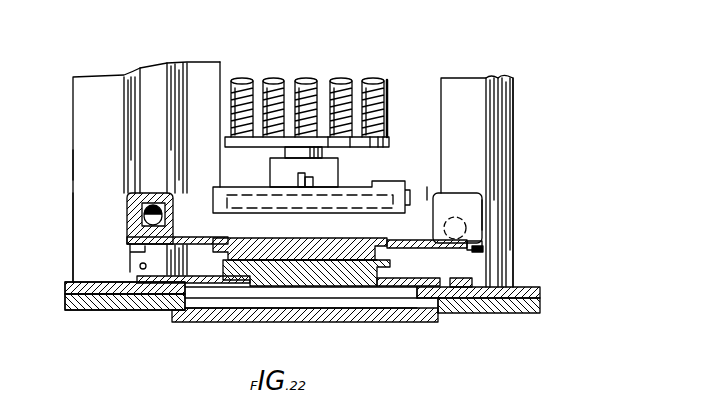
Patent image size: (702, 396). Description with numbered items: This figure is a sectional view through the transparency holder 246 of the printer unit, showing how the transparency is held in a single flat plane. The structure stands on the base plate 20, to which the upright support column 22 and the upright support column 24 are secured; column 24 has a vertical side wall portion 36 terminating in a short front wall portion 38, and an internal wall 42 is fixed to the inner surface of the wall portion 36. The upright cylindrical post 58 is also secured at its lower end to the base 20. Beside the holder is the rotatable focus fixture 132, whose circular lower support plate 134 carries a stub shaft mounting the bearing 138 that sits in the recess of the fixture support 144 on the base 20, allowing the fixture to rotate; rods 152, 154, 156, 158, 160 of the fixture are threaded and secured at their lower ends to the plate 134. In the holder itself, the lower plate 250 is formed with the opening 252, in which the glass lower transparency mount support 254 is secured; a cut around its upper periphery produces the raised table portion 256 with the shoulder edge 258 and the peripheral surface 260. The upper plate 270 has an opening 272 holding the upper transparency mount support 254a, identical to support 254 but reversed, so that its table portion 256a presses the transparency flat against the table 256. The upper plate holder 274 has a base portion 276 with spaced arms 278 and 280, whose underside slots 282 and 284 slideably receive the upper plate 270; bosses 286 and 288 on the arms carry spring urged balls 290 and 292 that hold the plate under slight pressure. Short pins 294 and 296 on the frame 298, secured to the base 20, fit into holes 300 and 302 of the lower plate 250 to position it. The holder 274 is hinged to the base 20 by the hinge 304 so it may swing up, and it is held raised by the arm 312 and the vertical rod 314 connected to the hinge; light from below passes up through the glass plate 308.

The base plate 20 is at (540, 309).
The upright support column 22 is at (469, 77).
The upright support column 24 is at (72, 163).
The vertical side wall portion 36 is at (73, 133).
The short front wall portion 38 is at (88, 193).
The internal wall 42 is at (194, 77).
The upright cylindrical post 58 is at (505, 148).
The rotatable focus fixture 132 is at (388, 88).
The circular lower support plate 134 is at (389, 144).
The bearing 138 is at (320, 152).
The fixture support 144 is at (340, 168).
The fixture rod 152 is at (376, 80).
The fixture rod 154 is at (340, 80).
The fixture rod 156 is at (310, 80).
The fixture rod 158 is at (272, 80).
The fixture rod 160 is at (245, 80).
The transparency holder 246 is at (201, 222).
The lower plate 250 is at (406, 278).
The opening 252 is at (385, 288).
The lower transparency mount support 254 is at (330, 291).
The upper transparency mount support 254a is at (329, 241).
The raised table portion 256 is at (273, 287).
The table portion 256a is at (297, 262).
The shoulder edge 258 is at (223, 283).
The peripheral surface 260 is at (145, 270).
The upper plate 270 is at (427, 211).
The opening 272 is at (386, 242).
The upper plate holder 274 is at (437, 196).
The base portion 276 is at (191, 212).
The arm 278 is at (483, 240).
The arm 280 is at (133, 240).
The slot 282 is at (484, 249).
The slot 284 is at (134, 252).
The boss 286 is at (480, 198).
The boss 288 is at (140, 193).
The spring urged ball 290 is at (465, 212).
The spring urged ball 292 is at (150, 222).
The short pin 294 is at (460, 282).
The short pin 296 is at (148, 284).
The frame 298 is at (540, 291).
The hole 300 is at (455, 300).
The hole 302 is at (113, 312).
The hinge 304 is at (243, 190).
The glass plate 308 is at (415, 312).
The arm 312 is at (297, 183).
The vertical rod 314 is at (320, 178).